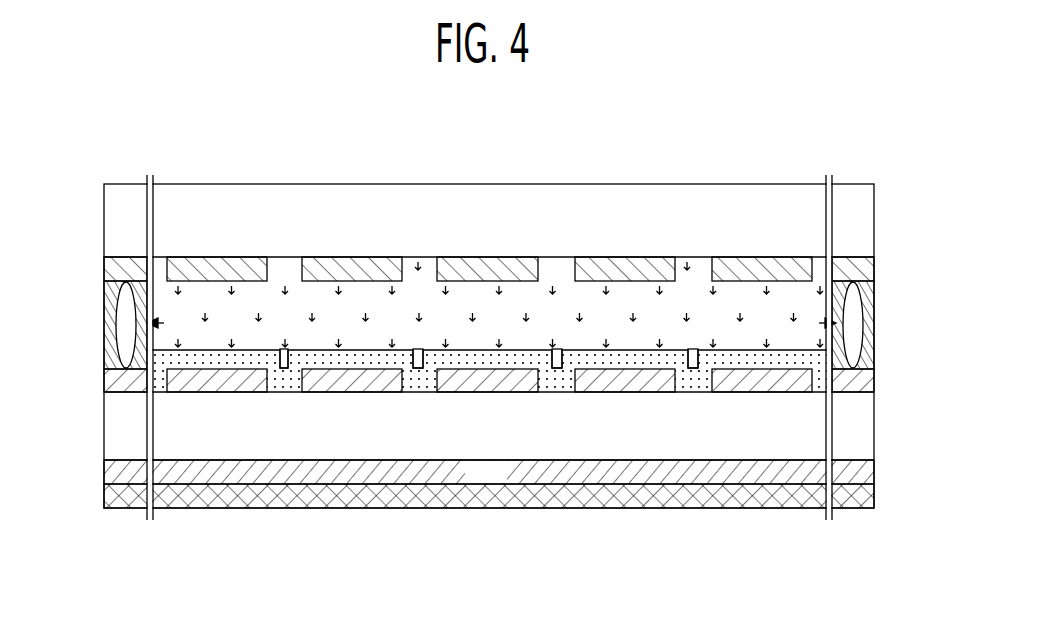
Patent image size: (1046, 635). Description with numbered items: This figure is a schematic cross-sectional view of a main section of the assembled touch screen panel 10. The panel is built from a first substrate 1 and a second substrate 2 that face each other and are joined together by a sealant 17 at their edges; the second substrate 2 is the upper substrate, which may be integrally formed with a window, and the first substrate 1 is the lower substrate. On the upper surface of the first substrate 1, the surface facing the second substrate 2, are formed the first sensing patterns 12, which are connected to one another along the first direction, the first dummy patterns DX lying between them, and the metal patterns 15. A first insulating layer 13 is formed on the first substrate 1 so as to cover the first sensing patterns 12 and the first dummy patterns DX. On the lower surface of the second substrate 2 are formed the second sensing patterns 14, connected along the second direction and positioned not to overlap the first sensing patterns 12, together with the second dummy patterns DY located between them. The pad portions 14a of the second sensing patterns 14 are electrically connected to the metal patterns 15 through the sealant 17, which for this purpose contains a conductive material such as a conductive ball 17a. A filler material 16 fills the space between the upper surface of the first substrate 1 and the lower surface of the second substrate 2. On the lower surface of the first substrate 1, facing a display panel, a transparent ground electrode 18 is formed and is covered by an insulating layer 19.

The touch screen panel 10 is at (718, 121).
The second substrate 2 is at (110, 222).
The pad portions 14a is at (453, 208).
The second sensing patterns 14 is at (655, 257).
The sealant 17 is at (453, 325).
The conductive ball 17a is at (118, 325).
The filler material 16 is at (553, 302).
The first insulating layer 13 is at (167, 356).
The metal patterns 15 is at (459, 468).
The first sensing patterns 12 is at (742, 382).
The first substrate 1 is at (110, 425).
The transparent ground electrode 18 is at (108, 468).
The insulating layer 19 is at (108, 498).